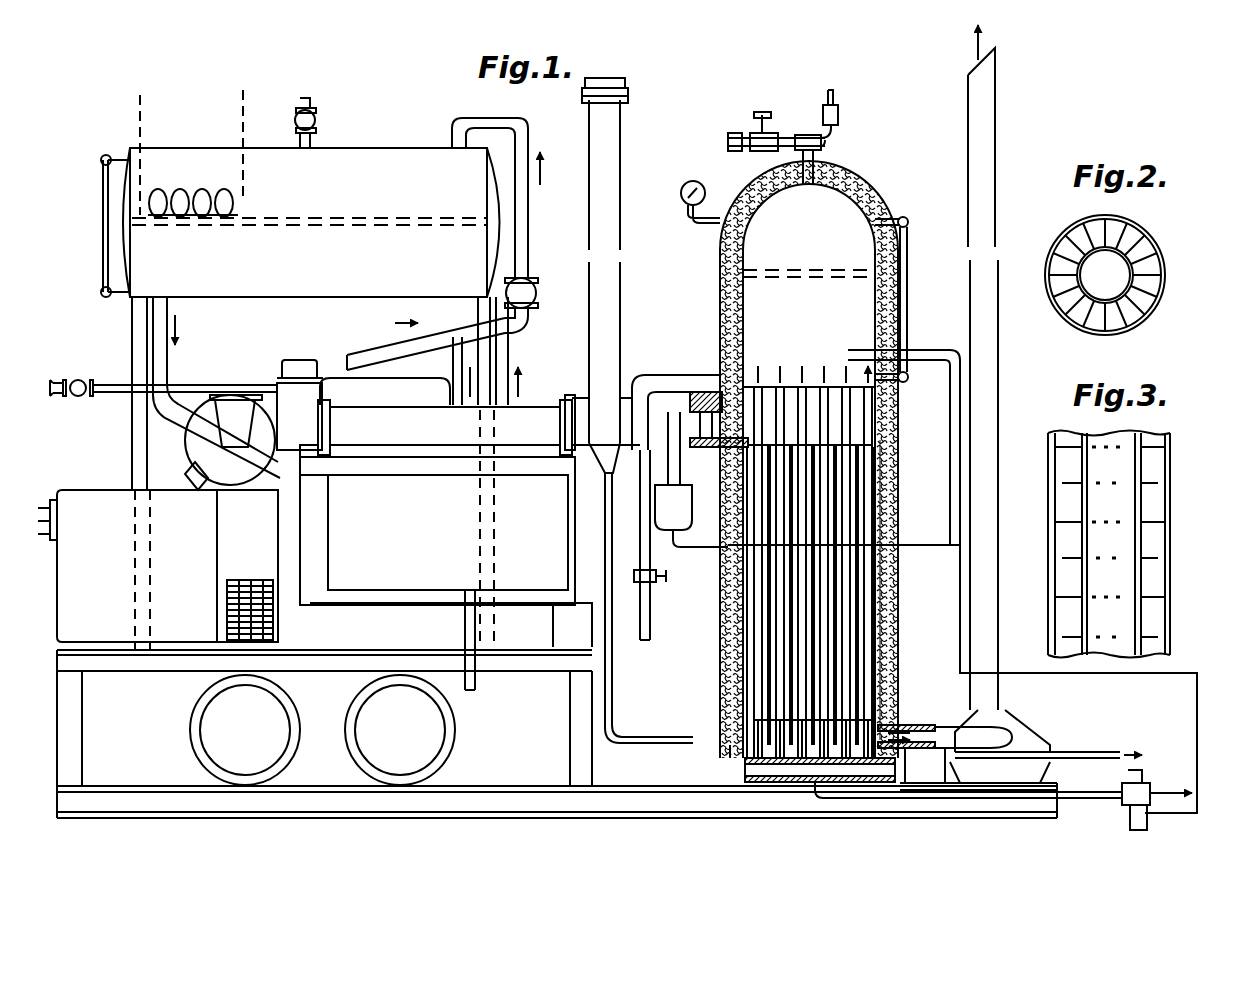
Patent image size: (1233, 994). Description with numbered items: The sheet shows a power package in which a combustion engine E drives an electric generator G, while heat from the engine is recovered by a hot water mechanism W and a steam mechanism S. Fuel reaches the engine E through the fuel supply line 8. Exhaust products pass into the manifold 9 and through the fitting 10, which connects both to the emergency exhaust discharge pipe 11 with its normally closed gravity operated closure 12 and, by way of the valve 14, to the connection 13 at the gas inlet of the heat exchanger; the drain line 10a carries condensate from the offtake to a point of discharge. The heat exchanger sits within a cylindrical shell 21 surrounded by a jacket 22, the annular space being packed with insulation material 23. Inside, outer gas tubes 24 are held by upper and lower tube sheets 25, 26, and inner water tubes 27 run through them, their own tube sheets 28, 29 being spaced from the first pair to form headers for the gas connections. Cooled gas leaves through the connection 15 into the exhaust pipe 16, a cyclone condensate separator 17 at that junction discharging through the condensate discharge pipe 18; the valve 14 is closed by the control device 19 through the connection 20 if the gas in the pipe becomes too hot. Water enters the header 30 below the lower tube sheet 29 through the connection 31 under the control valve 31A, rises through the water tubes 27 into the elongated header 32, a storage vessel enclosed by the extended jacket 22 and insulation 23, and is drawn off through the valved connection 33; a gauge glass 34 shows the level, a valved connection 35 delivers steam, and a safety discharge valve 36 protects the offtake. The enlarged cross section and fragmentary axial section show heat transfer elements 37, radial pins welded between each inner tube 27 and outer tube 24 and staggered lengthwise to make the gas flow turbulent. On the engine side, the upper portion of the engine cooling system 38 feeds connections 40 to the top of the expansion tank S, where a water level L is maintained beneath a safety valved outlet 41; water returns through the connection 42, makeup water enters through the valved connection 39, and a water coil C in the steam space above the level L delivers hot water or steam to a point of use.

In FIG. 1, the fuel supply line 8 is at (478, 690).
In FIG. 1, the manifold 9 is at (545, 405).
In FIG. 1, the fitting 10 is at (598, 408).
In FIG. 1, the drain line 10a is at (620, 695).
In FIG. 1, the emergency exhaust discharge pipe 11 is at (622, 165).
In FIG. 1, the gravity operated closure 12 is at (596, 80).
In FIG. 1, the connection 13 is at (700, 395).
In FIG. 1, the valve 14 is at (664, 386).
In FIG. 1, the connection 15 is at (912, 725).
In FIG. 1, the exhaust pipe 16 is at (1000, 352).
In FIG. 1, the condensate separator 17 is at (1025, 728).
In FIG. 1, the condensate discharge pipe 18 is at (1065, 752).
In FIG. 1, the valve control device 19 is at (682, 500).
In FIG. 1, the connection 20 is at (936, 545).
In FIG. 1, the shell 21 is at (898, 600).
In FIG. 1, the jacket 22 is at (900, 205).
In FIG. 1, the insulation material 23 is at (845, 165).
In FIG. 1, the outer gas tubes 24 is at (880, 481).
In FIG. 2, the outer gas tubes 24 is at (1165, 292).
In FIG. 3, the outer gas tubes 24 is at (1172, 588).
In FIG. 1, the upper tube sheet 25 is at (855, 445).
In FIG. 1, the lower tube sheet 26 is at (735, 730).
In FIG. 1, the inner water tubes 27 is at (882, 404).
In FIG. 2, the inner water tubes 27 is at (1152, 250).
In FIG. 3, the inner water tubes 27 is at (1140, 640).
In FIG. 1, the upper tube sheet 28 is at (850, 382).
In FIG. 1, the lower tube sheet 29 is at (978, 769).
In FIG. 1, the header 30 is at (745, 776).
In FIG. 1, the water supply connection 31 is at (1080, 793).
In FIG. 1, the control valve 31A is at (1130, 803).
In FIG. 1, the header 32 is at (905, 240).
In FIG. 1, the valved connection 33 is at (650, 622).
In FIG. 1, the gauge glass 34 is at (908, 288).
In FIG. 1, the valved connection 35 is at (768, 132).
In FIG. 1, the safety discharge valve 36 is at (838, 108).
In FIG. 2, the heat transfer elements 37 is at (1125, 328).
In FIG. 3, the heat transfer elements 37 is at (1152, 515).
In FIG. 1, the upper portion of engine cooling system 38 is at (370, 393).
In FIG. 1, the valved connection 39 is at (103, 385).
In FIG. 1, the connections 40 is at (410, 352).
In FIG. 1, the safety valved outlet 41 is at (318, 118).
In FIG. 1, the connection 42 is at (168, 363).
In FIG. 1, the expansion tank S is at (203, 148).
In FIG. 1, the water coil C is at (250, 180).
In FIG. 1, the water level L is at (330, 212).
In FIG. 1, the electric generator G is at (97, 487).
In FIG. 1, the engine E is at (565, 494).
In FIG. 1, the hot water mechanism W is at (902, 458).